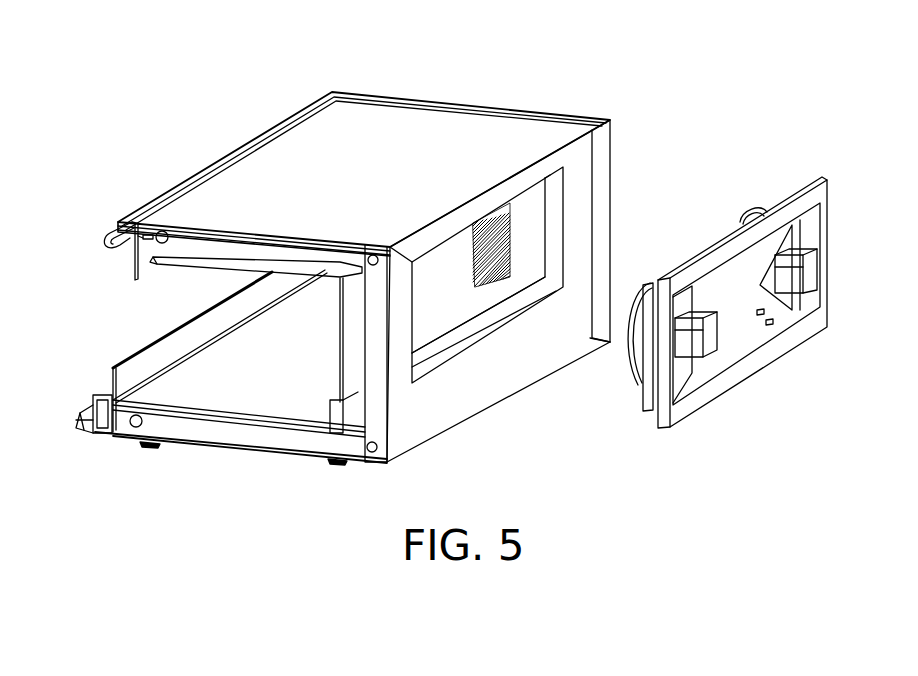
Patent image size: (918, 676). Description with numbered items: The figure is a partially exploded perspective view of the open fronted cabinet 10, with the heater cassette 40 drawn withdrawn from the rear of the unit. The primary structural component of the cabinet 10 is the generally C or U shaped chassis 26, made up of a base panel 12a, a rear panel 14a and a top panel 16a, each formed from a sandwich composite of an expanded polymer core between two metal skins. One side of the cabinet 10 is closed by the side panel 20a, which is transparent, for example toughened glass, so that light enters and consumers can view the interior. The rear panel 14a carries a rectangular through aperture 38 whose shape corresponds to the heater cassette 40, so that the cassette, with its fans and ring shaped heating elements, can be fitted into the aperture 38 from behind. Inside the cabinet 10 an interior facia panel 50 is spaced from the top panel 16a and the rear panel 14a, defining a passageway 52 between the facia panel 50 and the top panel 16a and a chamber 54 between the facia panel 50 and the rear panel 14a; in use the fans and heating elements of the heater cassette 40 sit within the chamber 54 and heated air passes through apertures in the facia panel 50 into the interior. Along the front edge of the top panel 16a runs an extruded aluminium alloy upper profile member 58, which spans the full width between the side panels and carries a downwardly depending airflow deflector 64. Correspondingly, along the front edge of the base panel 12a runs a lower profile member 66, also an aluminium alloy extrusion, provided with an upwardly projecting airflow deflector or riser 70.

The cabinet 10 is at (483, 84).
The side panel 20a is at (567, 117).
The top panel 16a is at (193, 242).
The interior facia panel 50 is at (462, 314).
The through aperture 38 is at (447, 353).
The chassis 26 is at (572, 237).
The rear panel 14a is at (378, 420).
The passageway 52 is at (288, 262).
The chamber 54 is at (353, 373).
The airflow deflector or riser 70 is at (122, 383).
The base panel 12a is at (253, 433).
The lower profile member 66 is at (78, 430).
The upper profile member 58 is at (118, 222).
The airflow deflector 64 is at (143, 262).
The heater cassette 40 is at (730, 399).